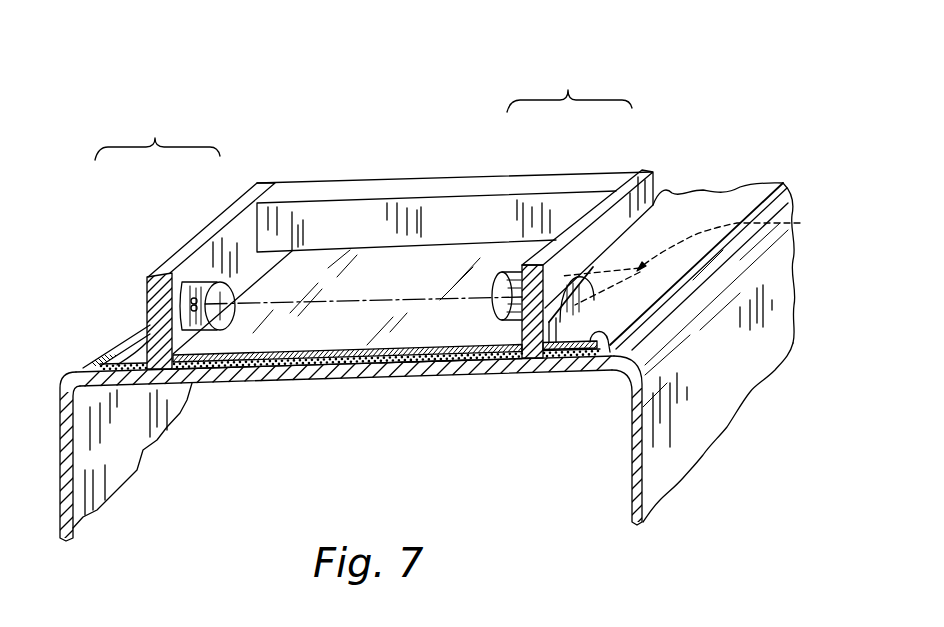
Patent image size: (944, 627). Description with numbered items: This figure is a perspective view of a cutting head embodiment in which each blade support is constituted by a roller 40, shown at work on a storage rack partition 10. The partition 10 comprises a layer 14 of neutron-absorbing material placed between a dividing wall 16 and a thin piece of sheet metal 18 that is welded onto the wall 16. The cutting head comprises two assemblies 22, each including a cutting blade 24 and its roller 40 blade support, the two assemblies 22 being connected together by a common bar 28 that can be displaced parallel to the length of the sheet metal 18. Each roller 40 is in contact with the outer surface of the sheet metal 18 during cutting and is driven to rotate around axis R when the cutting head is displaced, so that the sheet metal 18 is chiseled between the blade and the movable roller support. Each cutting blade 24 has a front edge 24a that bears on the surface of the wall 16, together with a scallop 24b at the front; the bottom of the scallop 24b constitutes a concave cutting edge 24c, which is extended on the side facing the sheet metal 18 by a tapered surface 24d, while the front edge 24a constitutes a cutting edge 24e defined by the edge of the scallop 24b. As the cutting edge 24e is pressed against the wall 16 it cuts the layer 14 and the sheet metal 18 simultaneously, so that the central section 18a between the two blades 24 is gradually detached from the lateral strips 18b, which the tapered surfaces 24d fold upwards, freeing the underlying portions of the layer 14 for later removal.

The partition 10 is at (480, 384).
The layer of neutron-absorbing material 14 is at (310, 372).
The dividing wall 16 is at (243, 376).
The sheet metal 18 is at (376, 366).
The central section 18a is at (424, 370).
The lateral strips 18b is at (124, 348).
The blade-blade support assembly 22 is at (363, 111).
The cutting blade 24 is at (226, 216).
The front edge 24a is at (536, 360).
The scallop 24b is at (641, 255).
The concave cutting edge 24c is at (660, 315).
The tapered surface 24d is at (560, 264).
The cutting edge 24e is at (700, 258).
The common bar 28 is at (414, 186).
The roller 40 is at (213, 282).
The axis R is at (373, 297).